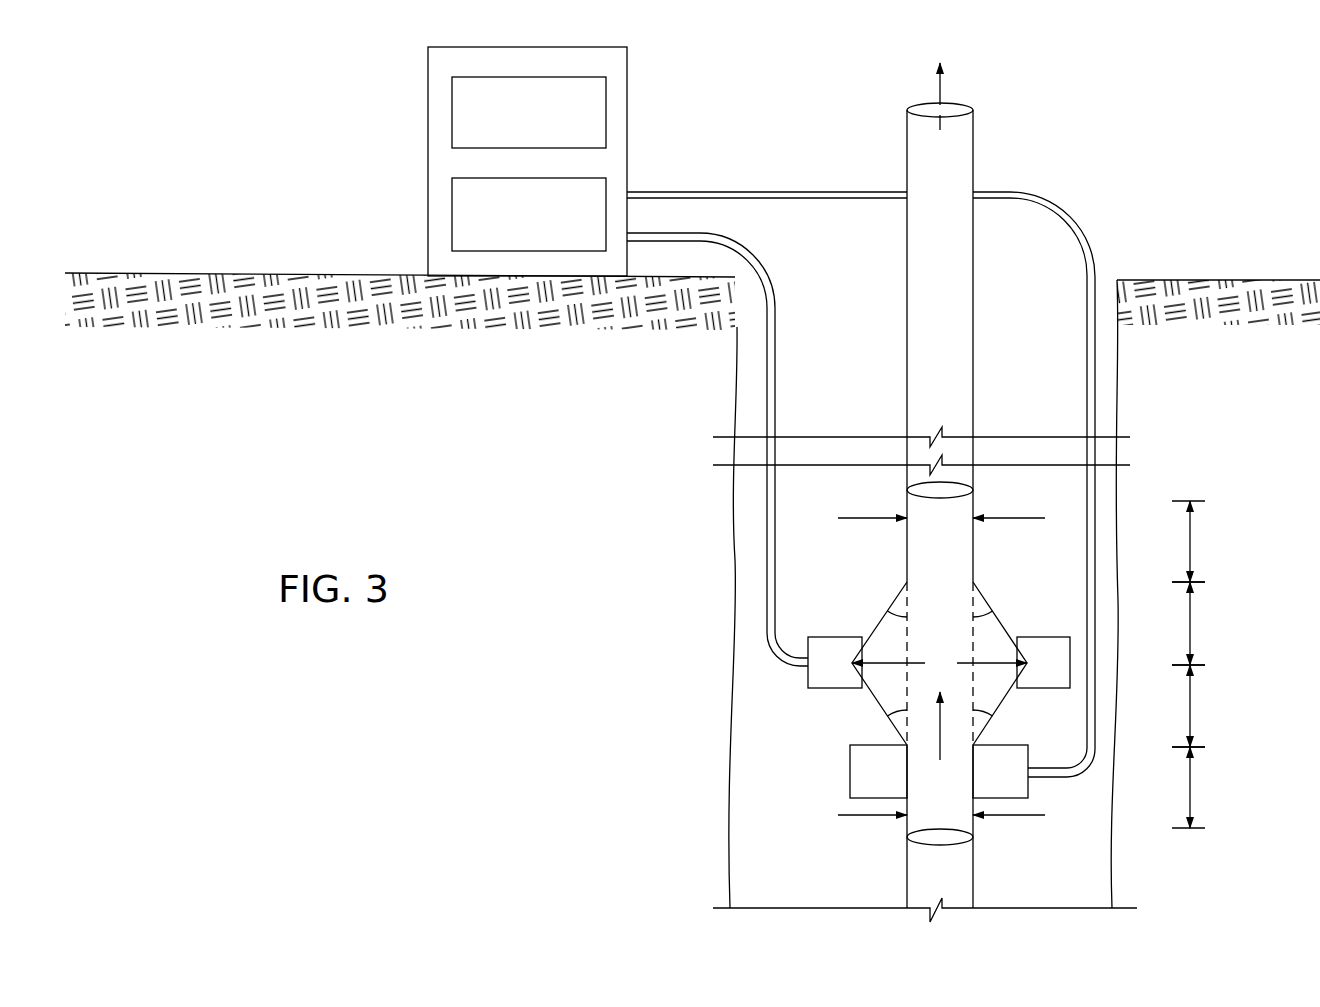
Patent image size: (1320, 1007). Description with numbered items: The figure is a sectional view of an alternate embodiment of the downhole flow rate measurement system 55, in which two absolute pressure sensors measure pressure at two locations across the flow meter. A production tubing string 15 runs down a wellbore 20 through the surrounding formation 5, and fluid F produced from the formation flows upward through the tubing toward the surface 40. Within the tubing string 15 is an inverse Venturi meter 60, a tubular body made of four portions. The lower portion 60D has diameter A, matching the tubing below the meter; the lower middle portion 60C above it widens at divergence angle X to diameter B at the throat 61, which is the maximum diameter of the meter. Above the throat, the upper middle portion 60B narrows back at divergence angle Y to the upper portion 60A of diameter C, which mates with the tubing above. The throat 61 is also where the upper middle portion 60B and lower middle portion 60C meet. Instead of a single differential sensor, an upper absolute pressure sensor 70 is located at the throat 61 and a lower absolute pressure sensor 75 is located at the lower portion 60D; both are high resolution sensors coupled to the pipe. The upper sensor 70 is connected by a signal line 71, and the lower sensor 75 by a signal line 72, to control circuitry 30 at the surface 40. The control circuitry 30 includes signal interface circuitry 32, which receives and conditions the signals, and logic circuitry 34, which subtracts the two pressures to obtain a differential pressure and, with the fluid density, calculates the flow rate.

The formation 5 is at (366, 312).
The surface 40 is at (192, 273).
The control circuitry 30 is at (428, 58).
The logic circuitry 34 is at (452, 108).
The signal interface circuitry 32 is at (452, 212).
The signal line 72 is at (1057, 208).
The signal line 71 is at (743, 248).
The wellbore 20 is at (1122, 375).
The production tubing string 15 is at (975, 137).
The downhole flow rate measurement system 55 is at (758, 655).
The inverse Venturi meter 60 is at (976, 543).
The throat 61 is at (1027, 665).
The upper absolute pressure sensor 70 is at (808, 672).
The lower absolute pressure sensor 75 is at (1030, 797).
The upper portion 60A is at (1212, 541).
The upper middle portion 60B is at (1212, 623).
The lower middle portion 60C is at (1212, 706).
The lower portion 60D is at (1212, 787).